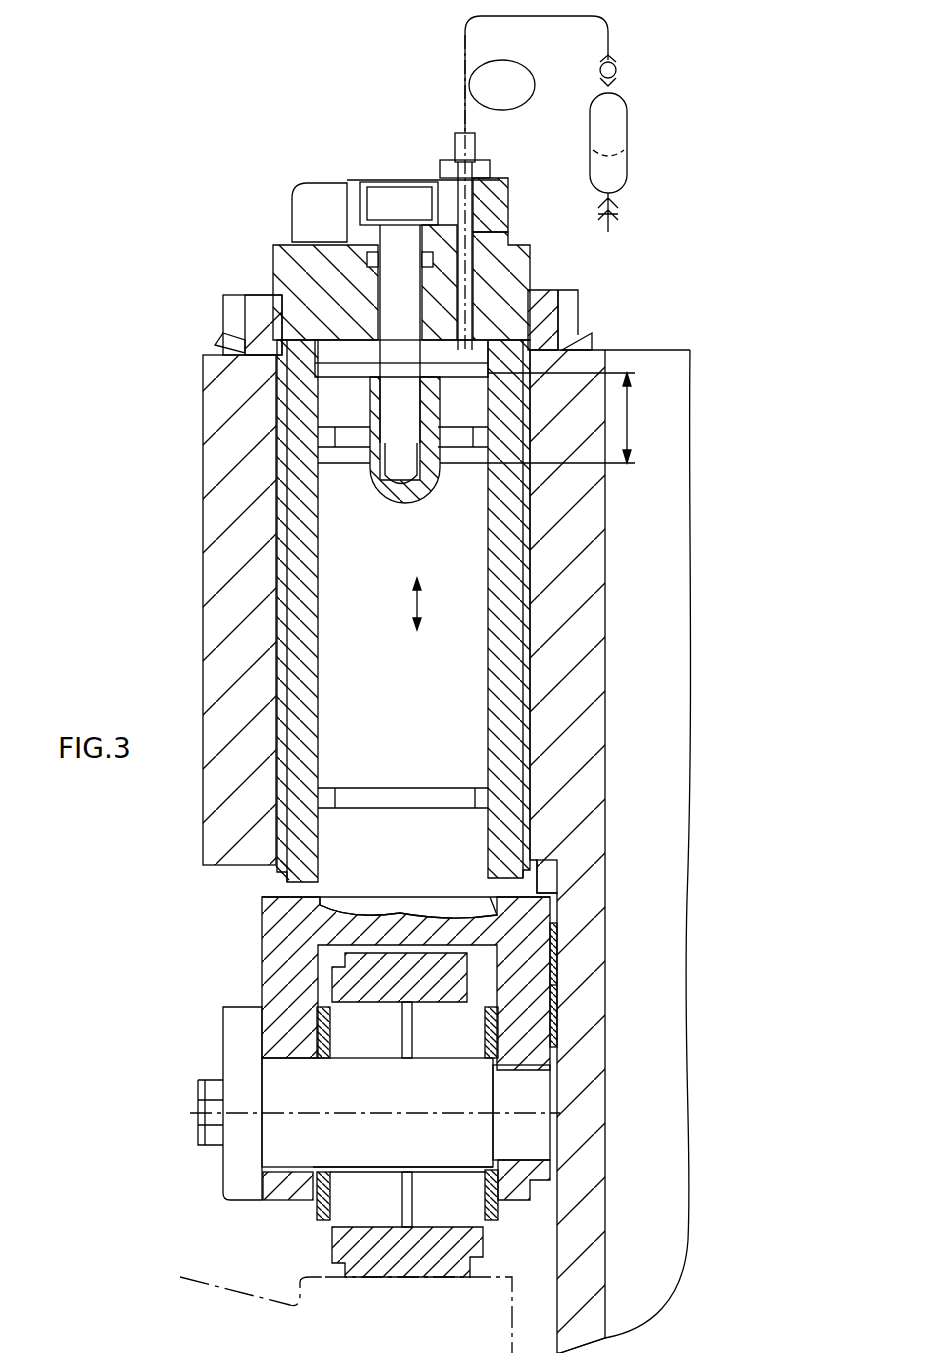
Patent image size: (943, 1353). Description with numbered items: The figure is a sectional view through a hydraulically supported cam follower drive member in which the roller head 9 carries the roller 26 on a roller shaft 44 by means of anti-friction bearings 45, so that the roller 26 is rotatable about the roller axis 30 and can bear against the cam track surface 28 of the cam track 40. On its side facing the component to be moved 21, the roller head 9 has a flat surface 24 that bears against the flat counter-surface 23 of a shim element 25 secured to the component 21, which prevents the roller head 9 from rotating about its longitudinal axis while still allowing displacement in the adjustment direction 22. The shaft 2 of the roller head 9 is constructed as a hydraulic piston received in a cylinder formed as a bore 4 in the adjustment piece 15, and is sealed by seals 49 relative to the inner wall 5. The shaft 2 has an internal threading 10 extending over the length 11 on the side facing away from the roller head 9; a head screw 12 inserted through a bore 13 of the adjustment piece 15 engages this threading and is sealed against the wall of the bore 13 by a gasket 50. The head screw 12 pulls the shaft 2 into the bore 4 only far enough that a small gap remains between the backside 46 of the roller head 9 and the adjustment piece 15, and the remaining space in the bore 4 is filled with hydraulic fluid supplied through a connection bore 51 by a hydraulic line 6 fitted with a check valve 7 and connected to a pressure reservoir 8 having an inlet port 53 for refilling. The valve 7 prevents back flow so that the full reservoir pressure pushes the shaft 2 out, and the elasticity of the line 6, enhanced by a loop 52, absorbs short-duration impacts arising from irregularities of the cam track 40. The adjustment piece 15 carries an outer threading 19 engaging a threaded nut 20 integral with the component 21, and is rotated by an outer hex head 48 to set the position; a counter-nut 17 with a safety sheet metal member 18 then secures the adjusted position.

The shaft 2 is at (330, 645).
The bore 4 is at (300, 372).
The inner wall 5 is at (318, 538).
The hydraulic line 6 is at (463, 96).
The check valve 7 is at (614, 65).
The pressure reservoir 8 is at (618, 118).
The roller head 9 is at (236, 977).
The internal threading 10 is at (385, 468).
The length 11 is at (630, 418).
The head screw 12 is at (282, 303).
The bore 13 is at (275, 256).
The adjustment piece 15 is at (300, 693).
The counter-nut 17 is at (552, 300).
The safety sheet metal member 18 is at (577, 340).
The outer threading 19 is at (280, 878).
The threaded nut 20 is at (207, 560).
The component to be moved 21 is at (683, 521).
The adjustment direction 22 is at (420, 603).
The counter-surface 23 is at (555, 903).
The flat surface 24 is at (557, 955).
The shim element 25 is at (557, 990).
The roller 26 is at (345, 1240).
The cam track surface 28 is at (325, 1277).
The roller axis 30 is at (325, 1110).
The cam track 40 is at (410, 1321).
The roller shaft 44 is at (470, 1101).
The anti-friction bearings 45 is at (478, 1206).
The backside 46 is at (381, 1048).
The outer hex head 48 is at (332, 200).
The seals 49 is at (325, 440).
The gasket 50 is at (333, 238).
The connection bore 51 is at (508, 226).
The loop 52 is at (523, 95).
The inlet port 53 is at (626, 222).